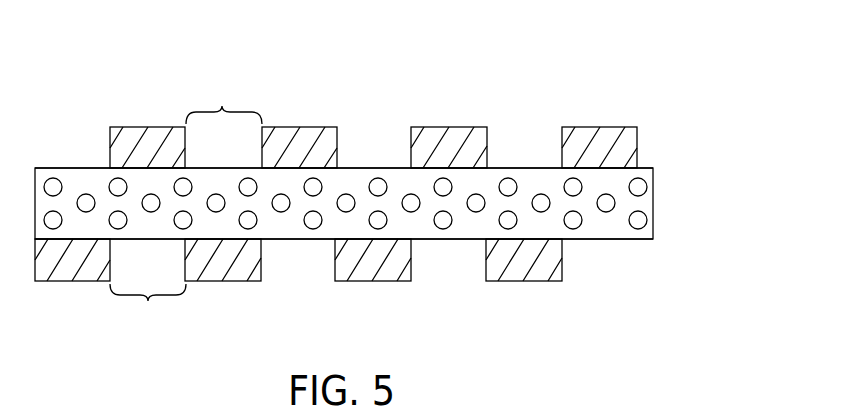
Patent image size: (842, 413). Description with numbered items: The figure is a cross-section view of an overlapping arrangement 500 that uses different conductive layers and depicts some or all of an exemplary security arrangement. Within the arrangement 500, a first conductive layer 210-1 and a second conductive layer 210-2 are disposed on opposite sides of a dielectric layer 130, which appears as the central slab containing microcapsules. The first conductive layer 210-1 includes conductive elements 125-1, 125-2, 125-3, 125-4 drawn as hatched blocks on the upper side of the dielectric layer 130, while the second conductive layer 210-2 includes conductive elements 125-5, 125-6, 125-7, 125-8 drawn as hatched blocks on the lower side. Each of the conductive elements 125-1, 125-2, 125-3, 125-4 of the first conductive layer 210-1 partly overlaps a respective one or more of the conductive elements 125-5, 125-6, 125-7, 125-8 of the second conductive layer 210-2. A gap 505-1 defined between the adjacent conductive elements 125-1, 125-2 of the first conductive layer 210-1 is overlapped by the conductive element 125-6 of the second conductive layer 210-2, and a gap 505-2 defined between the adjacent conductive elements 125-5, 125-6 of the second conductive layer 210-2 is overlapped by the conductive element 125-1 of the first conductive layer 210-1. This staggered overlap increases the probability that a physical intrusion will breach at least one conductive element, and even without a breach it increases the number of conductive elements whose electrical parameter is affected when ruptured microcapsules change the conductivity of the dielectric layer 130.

The overlapping arrangement 500 is at (629, 61).
The dielectric layer 130 is at (654, 205).
The first conductive layer 210-1 is at (650, 149).
The second conductive layer 210-2 is at (649, 264).
The conductive element 125-1 is at (150, 127).
The conductive element 125-2 is at (285, 127).
The conductive element 125-3 is at (445, 127).
The conductive element 125-4 is at (592, 127).
The conductive element 125-5 is at (73, 282).
The conductive element 125-6 is at (212, 282).
The conductive element 125-7 is at (370, 282).
The conductive element 125-8 is at (515, 282).
The gap 505-1 is at (222, 106).
The gap 505-2 is at (148, 301).